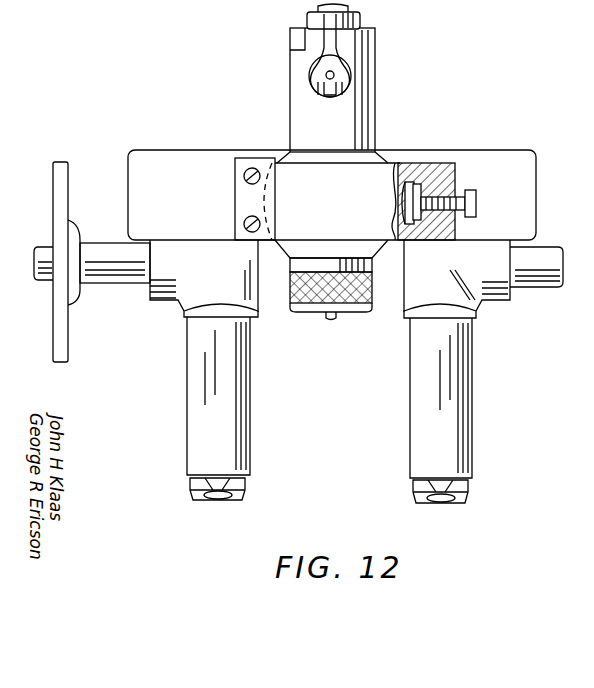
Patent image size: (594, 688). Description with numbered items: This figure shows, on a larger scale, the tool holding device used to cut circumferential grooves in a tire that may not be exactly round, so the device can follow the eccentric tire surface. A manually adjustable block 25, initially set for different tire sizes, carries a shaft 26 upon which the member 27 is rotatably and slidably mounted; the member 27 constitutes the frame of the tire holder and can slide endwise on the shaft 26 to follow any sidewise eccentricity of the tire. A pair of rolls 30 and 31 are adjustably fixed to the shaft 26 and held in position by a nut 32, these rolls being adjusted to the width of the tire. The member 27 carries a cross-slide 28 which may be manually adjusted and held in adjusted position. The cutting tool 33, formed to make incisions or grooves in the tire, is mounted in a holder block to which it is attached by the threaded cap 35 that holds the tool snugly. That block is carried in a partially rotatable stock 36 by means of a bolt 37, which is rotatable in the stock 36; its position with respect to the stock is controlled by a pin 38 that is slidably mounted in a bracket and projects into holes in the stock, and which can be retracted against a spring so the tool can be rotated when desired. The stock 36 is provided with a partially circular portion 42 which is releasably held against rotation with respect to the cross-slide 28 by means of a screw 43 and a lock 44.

The block 25 is at (53, 325).
The shaft 26 is at (106, 272).
The member 27 is at (528, 228).
The cross-slide 28 is at (448, 165).
The roll 30 is at (246, 414).
The roll 31 is at (411, 400).
The nut 32 is at (202, 500).
The cutting tool 33 is at (326, 312).
The threaded cap 35 is at (366, 306).
The stock 36 is at (365, 103).
The bolt 37 is at (308, 19).
The pin 38 is at (325, 95).
The partially circular portion 42 is at (384, 165).
The screw 43 is at (478, 203).
The lock 44 is at (420, 164).